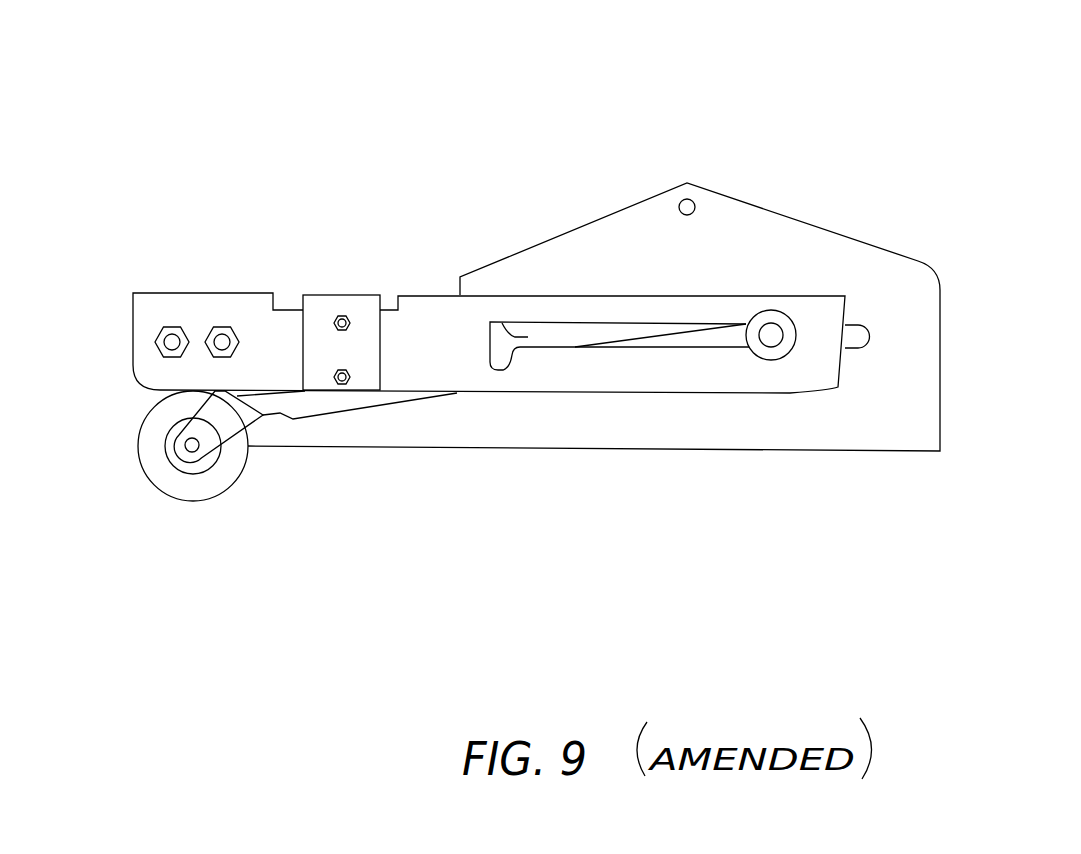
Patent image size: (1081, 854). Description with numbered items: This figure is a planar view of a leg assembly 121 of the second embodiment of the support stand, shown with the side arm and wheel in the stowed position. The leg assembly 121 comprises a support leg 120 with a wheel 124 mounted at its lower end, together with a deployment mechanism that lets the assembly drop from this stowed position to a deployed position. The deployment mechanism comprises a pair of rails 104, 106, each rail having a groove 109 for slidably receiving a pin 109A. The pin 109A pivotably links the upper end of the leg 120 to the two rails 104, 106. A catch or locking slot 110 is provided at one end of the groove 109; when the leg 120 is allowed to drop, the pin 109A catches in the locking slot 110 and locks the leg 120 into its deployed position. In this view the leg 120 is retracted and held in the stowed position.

The rail 104 is at (793, 237).
The rail 106 is at (183, 310).
The groove 109 is at (502, 323).
The pin 109A is at (783, 333).
The locking slot 110 is at (498, 357).
The support leg 120 is at (313, 403).
The leg assembly 121 is at (677, 133).
The wheel 124 is at (173, 483).